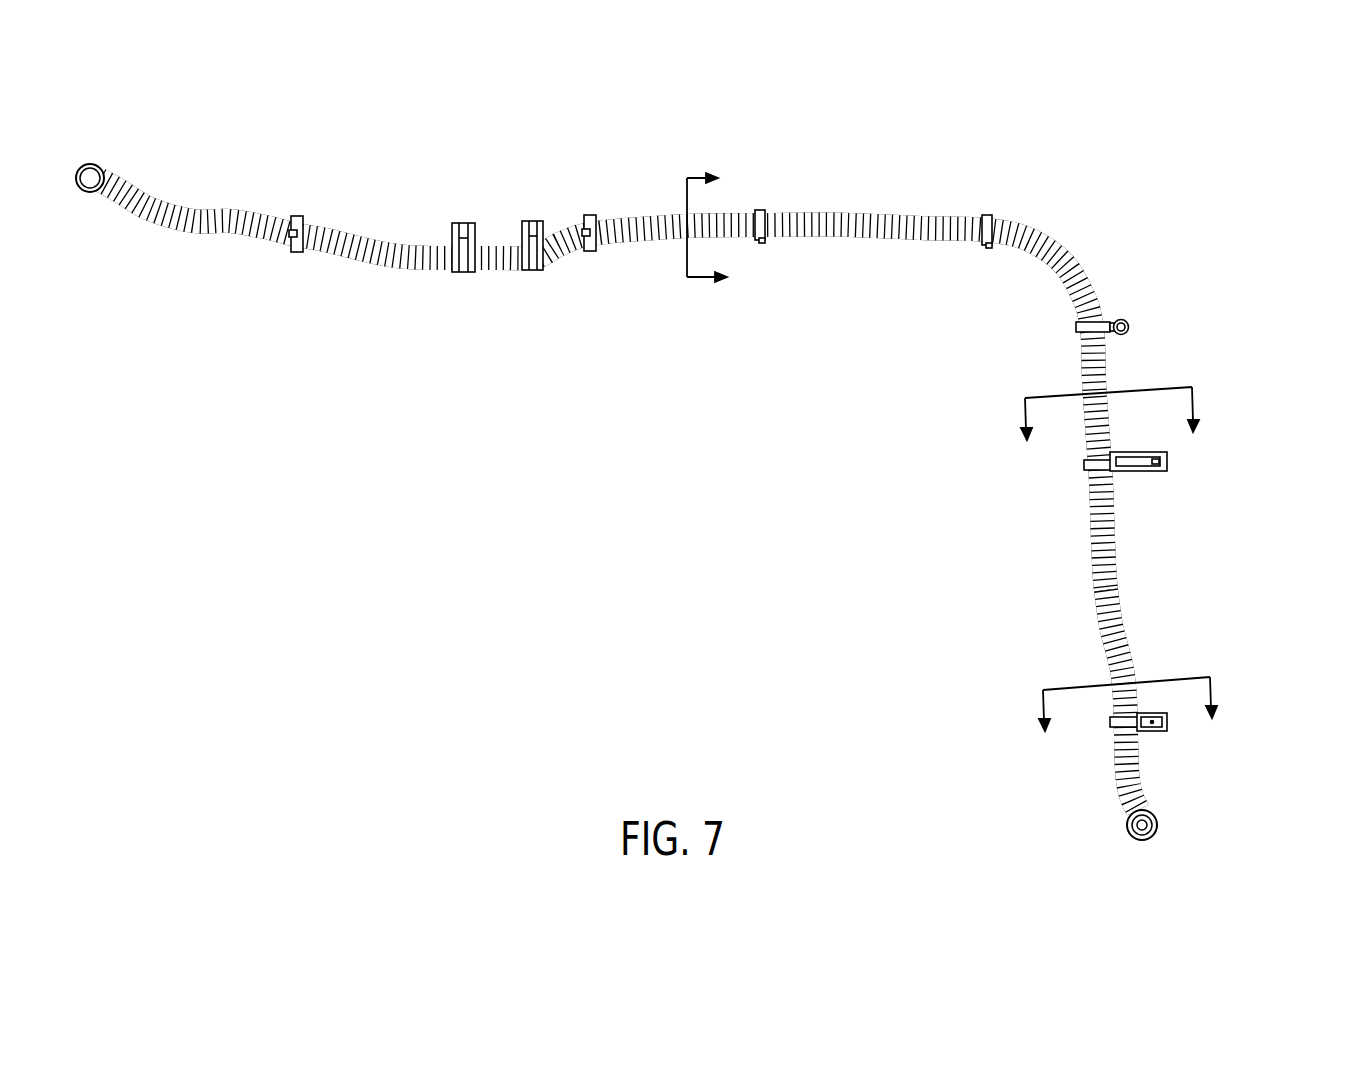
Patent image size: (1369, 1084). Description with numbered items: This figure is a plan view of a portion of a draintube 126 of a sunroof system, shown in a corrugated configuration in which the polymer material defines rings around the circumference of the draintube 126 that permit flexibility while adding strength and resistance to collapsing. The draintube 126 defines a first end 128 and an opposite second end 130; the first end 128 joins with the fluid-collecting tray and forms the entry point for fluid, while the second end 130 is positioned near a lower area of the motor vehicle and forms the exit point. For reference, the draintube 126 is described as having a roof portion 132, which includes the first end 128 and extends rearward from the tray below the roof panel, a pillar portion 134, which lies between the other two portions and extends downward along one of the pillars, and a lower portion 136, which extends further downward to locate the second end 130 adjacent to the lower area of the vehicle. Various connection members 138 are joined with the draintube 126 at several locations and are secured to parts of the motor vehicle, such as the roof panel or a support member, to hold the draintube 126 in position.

The draintube 126 is at (1274, 192).
The first end 128 is at (100, 164).
The second end 130 is at (1153, 838).
The roof portion 132 is at (410, 262).
The pillar portion 134 is at (1107, 352).
The lower portion 136 is at (1113, 785).
The connection members 138 is at (473, 222).